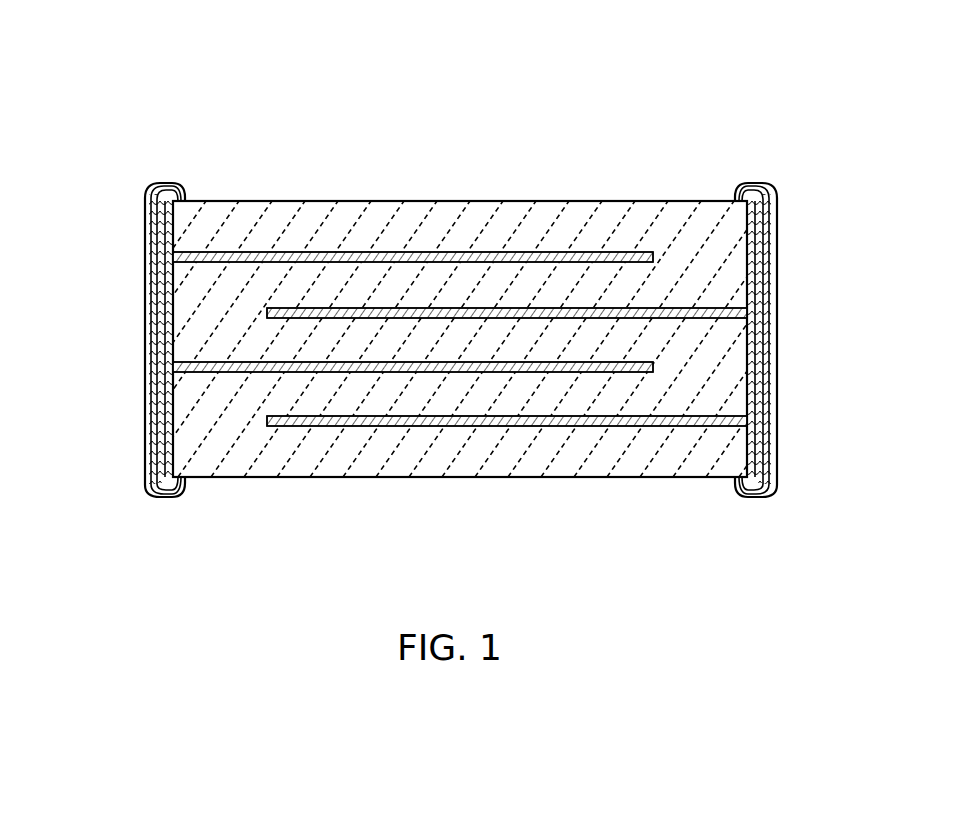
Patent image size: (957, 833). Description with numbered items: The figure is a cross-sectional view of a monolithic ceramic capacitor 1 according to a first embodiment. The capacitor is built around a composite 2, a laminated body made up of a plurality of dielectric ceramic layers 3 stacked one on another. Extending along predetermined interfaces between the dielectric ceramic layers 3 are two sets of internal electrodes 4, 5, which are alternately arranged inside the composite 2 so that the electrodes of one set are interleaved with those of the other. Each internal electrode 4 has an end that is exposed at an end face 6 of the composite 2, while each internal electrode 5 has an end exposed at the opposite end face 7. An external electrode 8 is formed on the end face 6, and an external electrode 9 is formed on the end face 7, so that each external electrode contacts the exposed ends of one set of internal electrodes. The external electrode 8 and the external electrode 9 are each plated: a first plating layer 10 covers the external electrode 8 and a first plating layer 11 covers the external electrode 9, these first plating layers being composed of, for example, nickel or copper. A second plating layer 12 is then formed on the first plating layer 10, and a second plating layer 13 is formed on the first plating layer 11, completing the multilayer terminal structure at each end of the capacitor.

The monolithic ceramic capacitor 1 is at (345, 38).
The composite 2 is at (388, 478).
The dielectric ceramic layers 3 is at (497, 280).
The internal electrodes 4 is at (342, 362).
The internal electrodes 5 is at (645, 318).
The end face 6 is at (152, 330).
The end face 7 is at (757, 333).
The external electrode 8 is at (152, 249).
The external electrode 9 is at (755, 238).
The first plating layer 10 is at (153, 394).
The first plating layer 11 is at (762, 397).
The second plating layer 12 is at (145, 458).
The second plating layer 13 is at (777, 460).